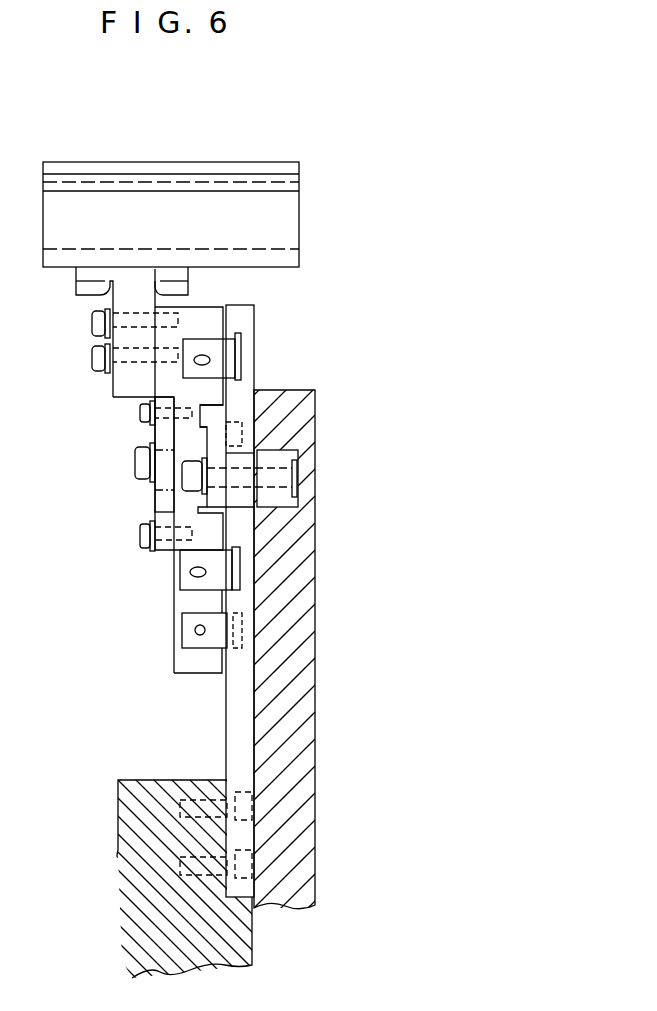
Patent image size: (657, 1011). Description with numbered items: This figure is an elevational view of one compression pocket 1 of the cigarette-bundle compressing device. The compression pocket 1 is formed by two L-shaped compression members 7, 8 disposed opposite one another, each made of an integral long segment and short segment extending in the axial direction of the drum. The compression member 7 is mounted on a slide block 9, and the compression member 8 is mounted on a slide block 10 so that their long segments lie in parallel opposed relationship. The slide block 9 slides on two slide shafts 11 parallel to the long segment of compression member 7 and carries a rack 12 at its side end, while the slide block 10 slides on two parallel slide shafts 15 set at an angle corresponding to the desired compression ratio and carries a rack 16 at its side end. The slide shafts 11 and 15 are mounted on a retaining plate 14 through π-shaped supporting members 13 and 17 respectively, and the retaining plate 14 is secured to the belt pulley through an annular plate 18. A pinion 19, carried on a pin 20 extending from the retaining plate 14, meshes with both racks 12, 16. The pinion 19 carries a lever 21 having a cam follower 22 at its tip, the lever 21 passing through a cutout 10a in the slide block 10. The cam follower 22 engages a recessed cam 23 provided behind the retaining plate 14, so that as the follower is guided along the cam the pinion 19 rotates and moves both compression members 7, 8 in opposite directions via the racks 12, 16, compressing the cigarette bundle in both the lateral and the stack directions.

The compression pocket 1 is at (268, 157).
The L-shaped compression member 7 is at (300, 168).
The L-shaped compression member 8 is at (282, 229).
The slide block 9 is at (193, 660).
The slide block 10 is at (203, 317).
The cutout 10a is at (213, 415).
The slide shaft 11 is at (197, 628).
The rack 12 is at (158, 513).
The π-shaped supporting member 13 is at (192, 635).
The retaining plate 14 is at (238, 723).
The slide shaft 15 is at (210, 360).
The rack 16 is at (162, 433).
The π-shaped supporting member 17 is at (228, 350).
The annular plate 18 is at (153, 785).
The pinion 19 is at (167, 488).
The pin 20 is at (133, 462).
The lever 21 is at (237, 462).
The cam follower 22 is at (277, 462).
The recessed cam 23 is at (297, 630).